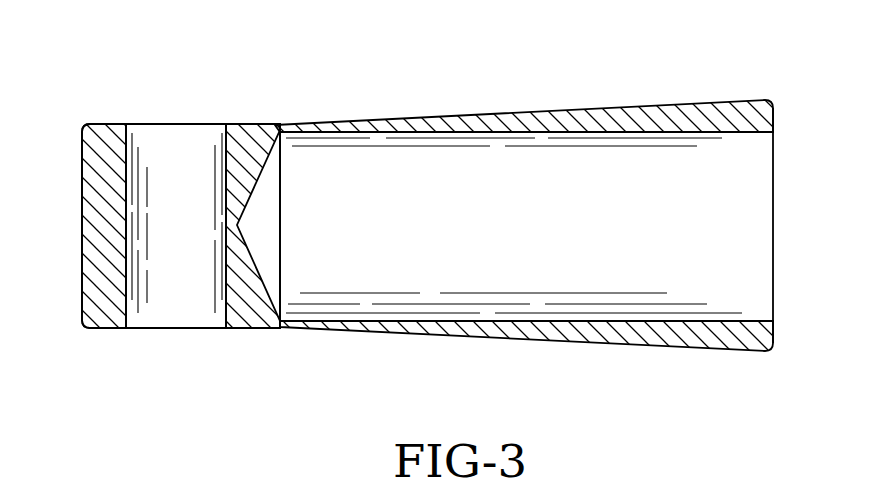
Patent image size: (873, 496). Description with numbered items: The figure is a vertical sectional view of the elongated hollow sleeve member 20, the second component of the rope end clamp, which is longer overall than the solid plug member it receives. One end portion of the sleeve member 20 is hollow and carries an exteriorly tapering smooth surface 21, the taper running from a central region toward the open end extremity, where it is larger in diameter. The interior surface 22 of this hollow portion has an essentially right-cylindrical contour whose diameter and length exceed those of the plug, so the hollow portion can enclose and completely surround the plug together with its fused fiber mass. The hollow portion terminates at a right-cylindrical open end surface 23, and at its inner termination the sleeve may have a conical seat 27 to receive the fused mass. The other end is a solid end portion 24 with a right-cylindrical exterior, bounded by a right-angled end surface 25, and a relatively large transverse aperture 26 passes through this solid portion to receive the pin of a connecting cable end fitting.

The hollow sleeve member 20 is at (558, 189).
The exteriorly tapering smooth surface 21 is at (678, 102).
The interior surface 22 is at (503, 237).
The open end surface 23 is at (773, 163).
The solid end portion 24 is at (189, 227).
The right-angled end surface 25 is at (82, 190).
The transverse aperture 26 is at (178, 305).
The conical seat 27 is at (266, 297).